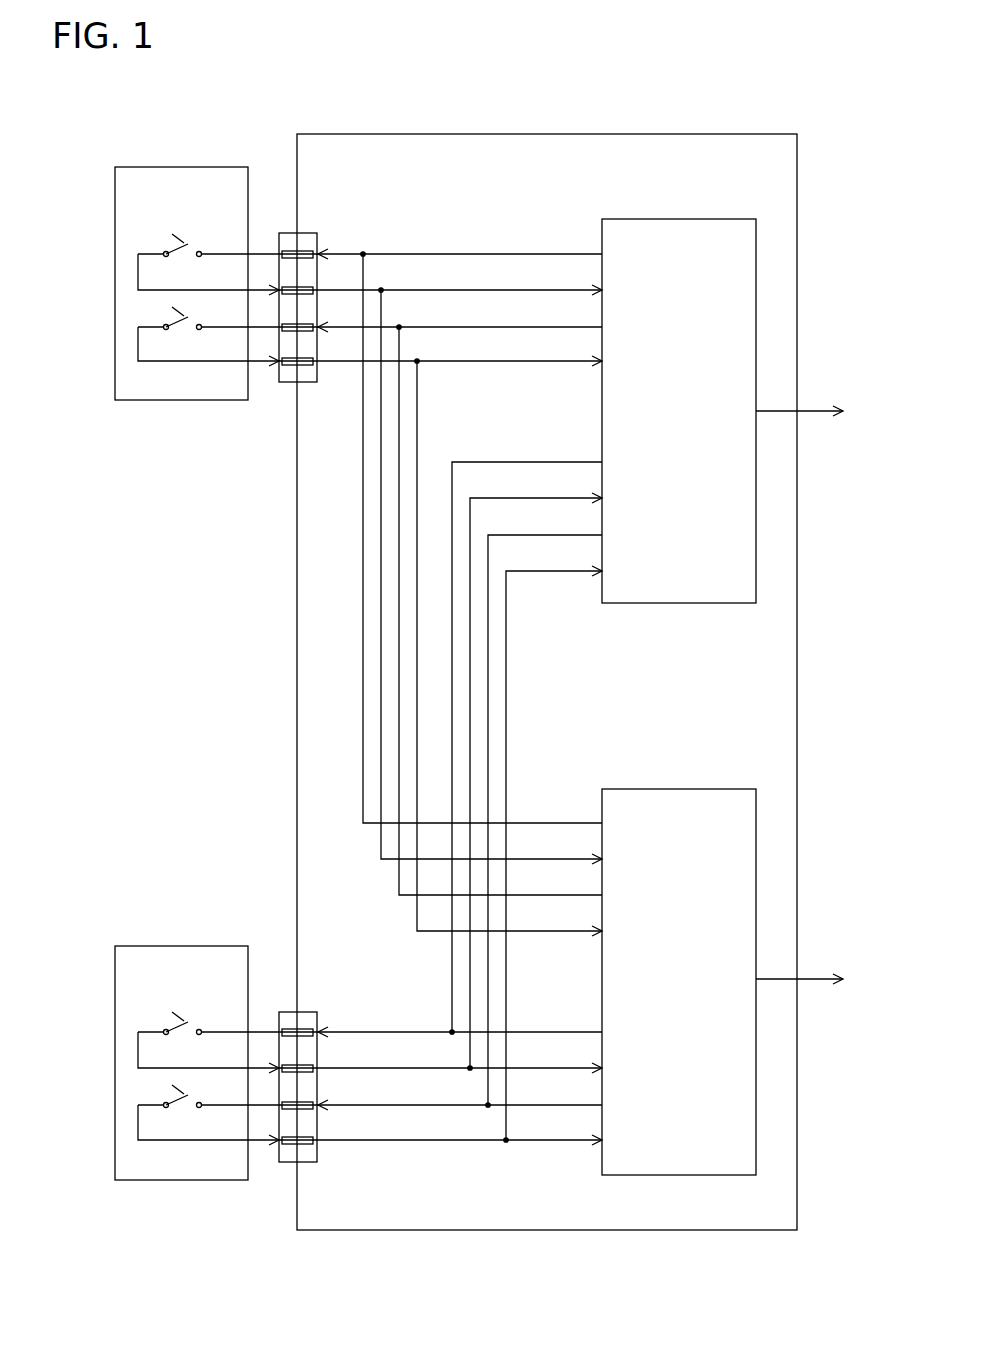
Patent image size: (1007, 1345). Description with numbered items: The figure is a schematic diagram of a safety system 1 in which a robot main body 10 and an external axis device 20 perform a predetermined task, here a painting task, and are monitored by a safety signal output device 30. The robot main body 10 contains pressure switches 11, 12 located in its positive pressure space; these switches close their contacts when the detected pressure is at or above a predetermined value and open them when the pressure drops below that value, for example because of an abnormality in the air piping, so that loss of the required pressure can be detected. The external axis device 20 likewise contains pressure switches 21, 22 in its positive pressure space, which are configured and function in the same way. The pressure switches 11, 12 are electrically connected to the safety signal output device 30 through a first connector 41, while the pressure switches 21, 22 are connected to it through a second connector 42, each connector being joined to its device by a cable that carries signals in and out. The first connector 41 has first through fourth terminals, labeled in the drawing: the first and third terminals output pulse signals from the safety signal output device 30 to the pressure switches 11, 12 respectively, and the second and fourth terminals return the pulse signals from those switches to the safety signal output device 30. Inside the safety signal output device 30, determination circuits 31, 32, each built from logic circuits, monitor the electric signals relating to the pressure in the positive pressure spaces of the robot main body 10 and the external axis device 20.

The safety system 1 is at (752, 98).
The robot main body 10 is at (115, 348).
The pressure switch 11 is at (185, 250).
The pressure switch 12 is at (185, 323).
The external axis device 20 is at (115, 1126).
The pressure switch 21 is at (185, 1028).
The pressure switch 22 is at (185, 1101).
The safety signal output device 30 is at (297, 709).
The determination circuit 31 is at (602, 423).
The determination circuit 32 is at (602, 991).
The first connector 41 is at (289, 382).
The second connector 42 is at (290, 1163).